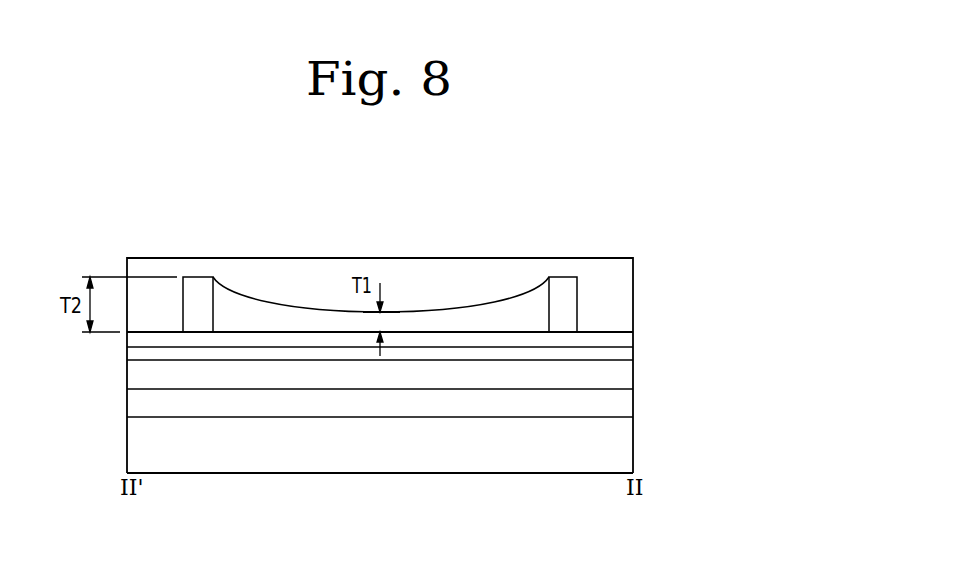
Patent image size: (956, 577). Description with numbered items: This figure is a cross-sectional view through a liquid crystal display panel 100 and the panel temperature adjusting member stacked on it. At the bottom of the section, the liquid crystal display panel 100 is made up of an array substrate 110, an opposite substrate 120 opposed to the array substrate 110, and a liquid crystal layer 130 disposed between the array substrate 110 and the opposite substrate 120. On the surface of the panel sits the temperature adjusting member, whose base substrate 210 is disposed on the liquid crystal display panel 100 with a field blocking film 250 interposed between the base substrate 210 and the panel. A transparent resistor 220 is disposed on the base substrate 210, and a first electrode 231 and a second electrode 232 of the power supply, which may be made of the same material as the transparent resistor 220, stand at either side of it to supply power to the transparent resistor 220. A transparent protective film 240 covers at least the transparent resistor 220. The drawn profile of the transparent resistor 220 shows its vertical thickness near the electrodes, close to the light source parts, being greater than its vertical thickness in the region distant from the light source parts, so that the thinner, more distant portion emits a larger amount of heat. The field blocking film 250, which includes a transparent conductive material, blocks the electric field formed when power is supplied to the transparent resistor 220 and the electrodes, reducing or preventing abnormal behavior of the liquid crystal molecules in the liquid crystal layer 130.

The liquid crystal display panel 100 is at (722, 368).
The array substrate 110 is at (627, 448).
The opposite substrate 120 is at (627, 373).
The liquid crystal layer 130 is at (627, 403).
The base substrate 210 is at (627, 342).
The transparent resistor 220 is at (534, 310).
The first electrode 231 is at (198, 283).
The second electrode 232 is at (565, 323).
The transparent protective film 240 is at (602, 271).
The field blocking film 250 is at (627, 355).